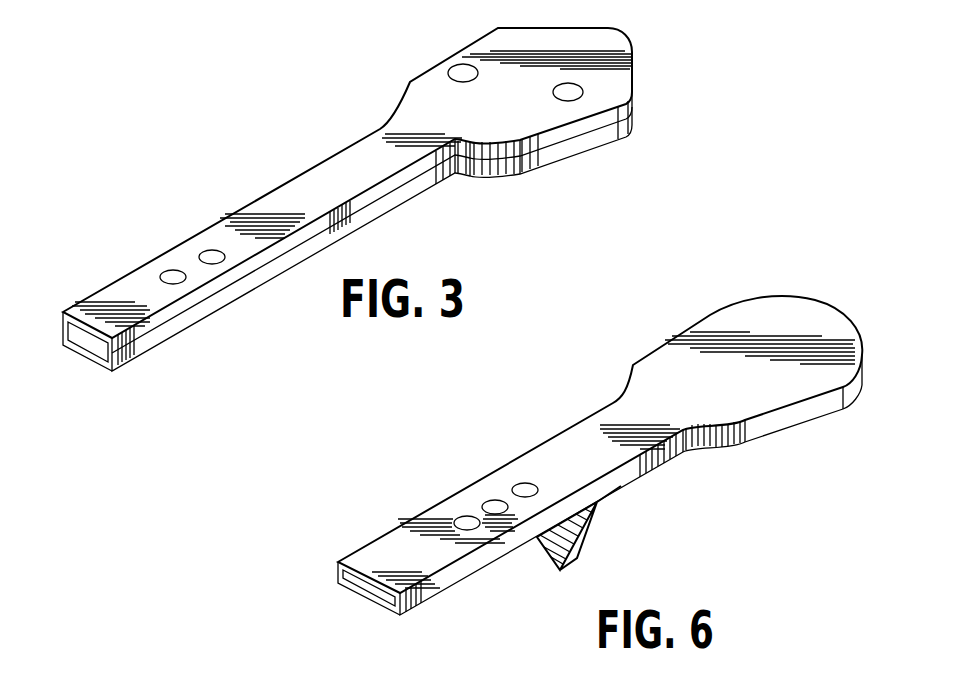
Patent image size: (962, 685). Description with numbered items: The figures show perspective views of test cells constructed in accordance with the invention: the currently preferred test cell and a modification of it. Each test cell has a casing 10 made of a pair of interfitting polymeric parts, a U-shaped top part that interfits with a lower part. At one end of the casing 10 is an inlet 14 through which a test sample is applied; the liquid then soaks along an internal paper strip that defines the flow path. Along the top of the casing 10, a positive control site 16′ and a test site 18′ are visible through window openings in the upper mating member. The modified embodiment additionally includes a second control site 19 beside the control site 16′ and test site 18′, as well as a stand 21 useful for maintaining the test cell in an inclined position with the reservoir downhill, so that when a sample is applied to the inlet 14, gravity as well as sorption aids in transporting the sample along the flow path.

In FIG. 3, the casing 10 is at (530, 153).
In FIG. 3, the inlet 14 is at (95, 342).
In FIG. 6, the inlet 14 is at (372, 592).
In FIG. 3, the positive control site 16′ is at (173, 274).
In FIG. 6, the positive control site 16′ is at (467, 521).
In FIG. 3, the test site 18′ is at (212, 255).
In FIG. 6, the test site 18′ is at (495, 505).
In FIG. 6, the second control site 19 is at (525, 488).
In FIG. 6, the stand 21 is at (592, 524).